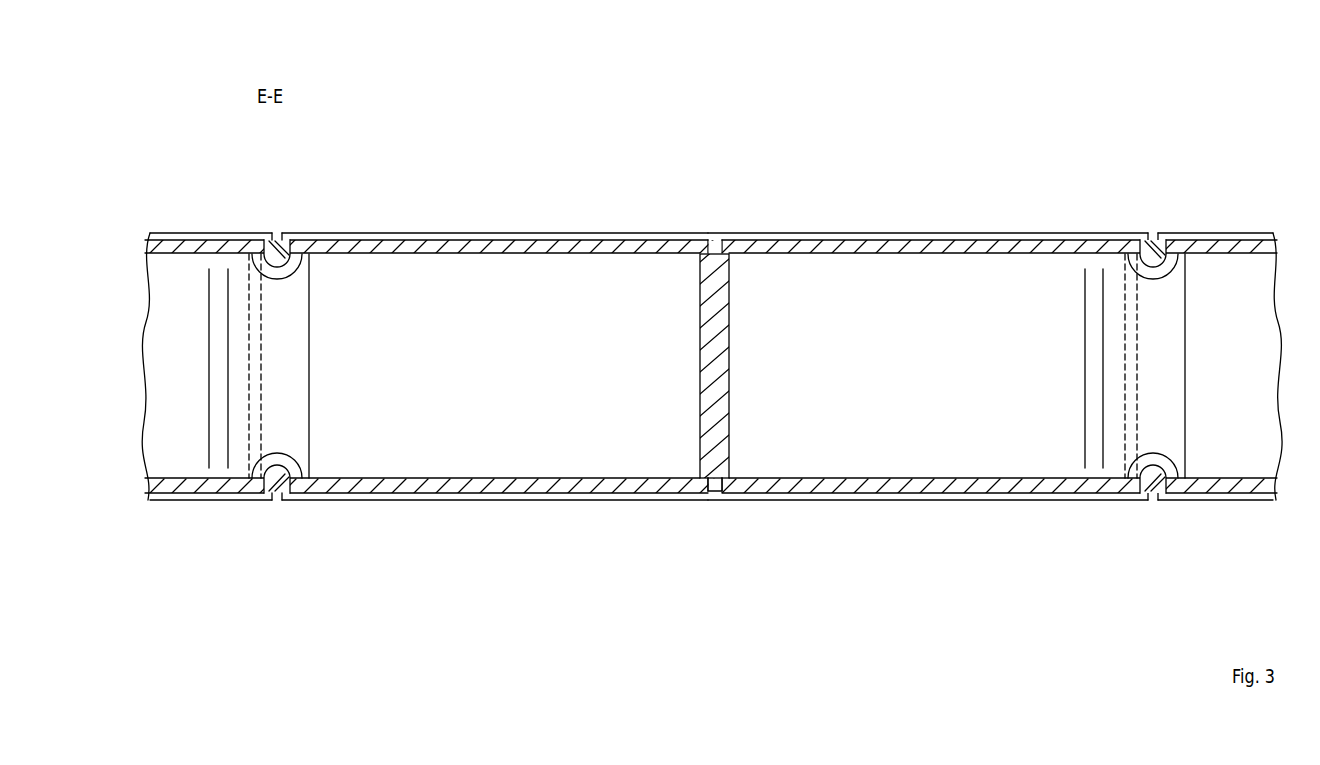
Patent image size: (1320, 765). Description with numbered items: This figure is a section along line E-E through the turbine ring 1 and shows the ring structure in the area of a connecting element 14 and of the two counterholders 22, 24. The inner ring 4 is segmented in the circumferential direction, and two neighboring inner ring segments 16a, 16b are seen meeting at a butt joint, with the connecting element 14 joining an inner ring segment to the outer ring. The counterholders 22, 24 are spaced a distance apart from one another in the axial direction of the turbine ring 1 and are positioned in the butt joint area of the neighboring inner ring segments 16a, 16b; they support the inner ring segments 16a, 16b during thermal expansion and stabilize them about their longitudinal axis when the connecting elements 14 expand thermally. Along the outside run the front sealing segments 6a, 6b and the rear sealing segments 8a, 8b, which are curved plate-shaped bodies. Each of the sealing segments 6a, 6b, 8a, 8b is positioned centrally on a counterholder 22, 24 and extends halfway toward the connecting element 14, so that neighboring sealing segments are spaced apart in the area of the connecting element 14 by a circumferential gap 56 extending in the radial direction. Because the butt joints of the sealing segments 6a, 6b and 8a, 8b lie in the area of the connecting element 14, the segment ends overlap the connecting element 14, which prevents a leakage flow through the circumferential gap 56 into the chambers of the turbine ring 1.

The turbine ring 1 is at (148, 66).
The inner ring 4 is at (937, 232).
The rear sealing segment 8a is at (628, 238).
The rear sealing segment 8b is at (797, 238).
The front sealing segment 6a is at (510, 479).
The front sealing segment 6b is at (923, 494).
The connecting element 14 is at (715, 305).
The inner ring segment 16a is at (902, 302).
The inner ring segment 16b is at (1233, 285).
The counterholder 24 is at (1147, 273).
The counterholder 22 is at (1158, 476).
The circumferential gap 56 is at (717, 481).